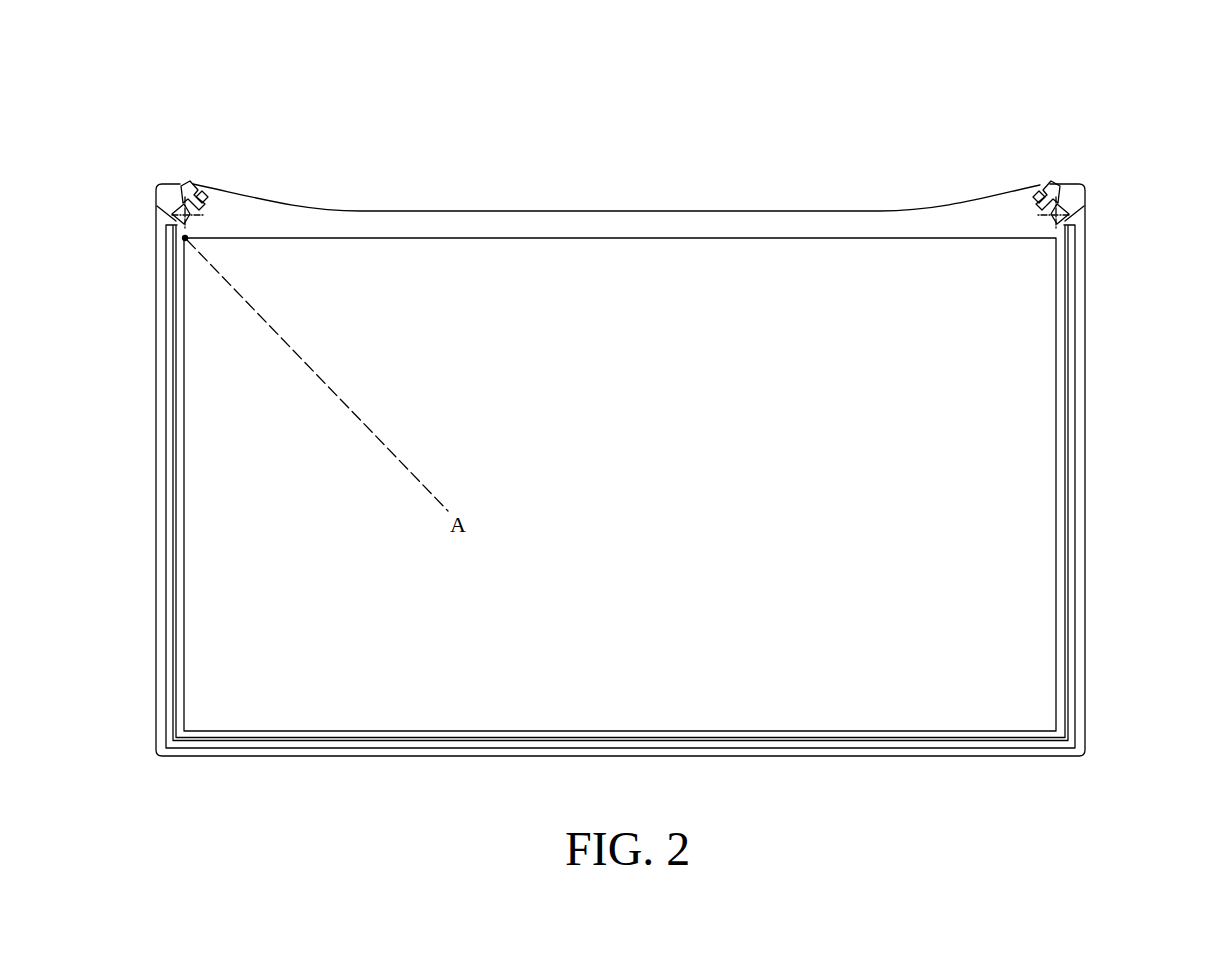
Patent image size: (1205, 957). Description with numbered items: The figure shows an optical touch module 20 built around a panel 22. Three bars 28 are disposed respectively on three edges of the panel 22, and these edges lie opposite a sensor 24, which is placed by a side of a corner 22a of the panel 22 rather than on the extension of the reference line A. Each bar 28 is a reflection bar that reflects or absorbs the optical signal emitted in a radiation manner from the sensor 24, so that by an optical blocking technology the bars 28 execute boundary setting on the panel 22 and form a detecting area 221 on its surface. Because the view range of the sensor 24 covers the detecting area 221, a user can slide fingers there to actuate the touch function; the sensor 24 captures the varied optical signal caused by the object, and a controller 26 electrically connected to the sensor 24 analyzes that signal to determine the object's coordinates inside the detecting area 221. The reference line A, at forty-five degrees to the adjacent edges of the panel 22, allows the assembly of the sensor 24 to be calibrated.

The optical touch module 20 is at (1073, 110).
The panel 22 is at (605, 223).
The corner 22a is at (184, 238).
The detecting area 221 is at (639, 532).
The sensor 24 is at (180, 206).
The controller 26 is at (190, 183).
The bar 28 is at (172, 493).